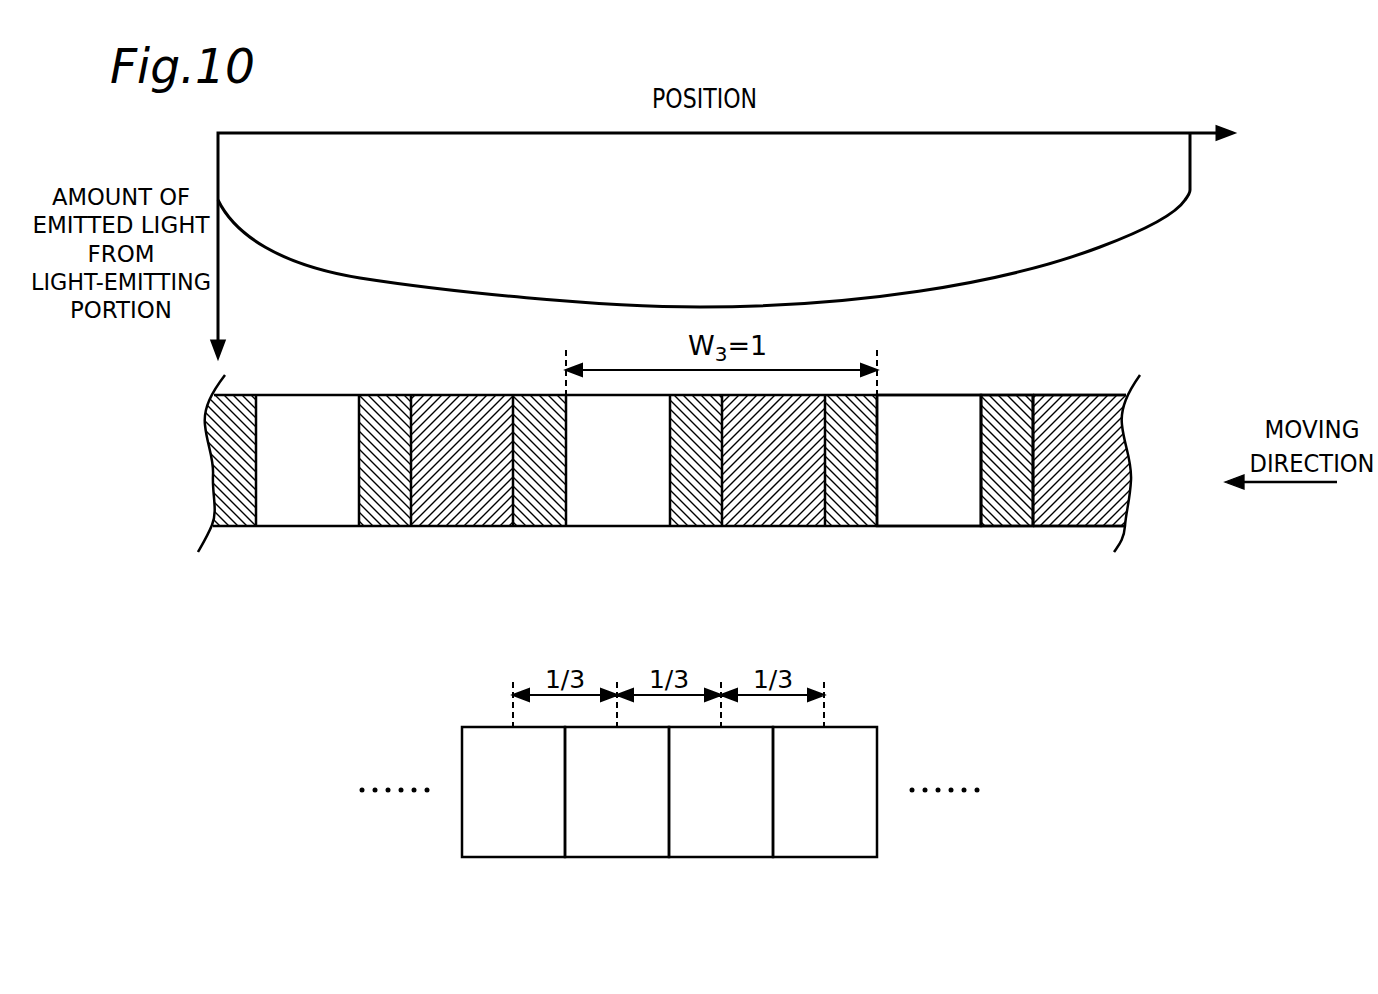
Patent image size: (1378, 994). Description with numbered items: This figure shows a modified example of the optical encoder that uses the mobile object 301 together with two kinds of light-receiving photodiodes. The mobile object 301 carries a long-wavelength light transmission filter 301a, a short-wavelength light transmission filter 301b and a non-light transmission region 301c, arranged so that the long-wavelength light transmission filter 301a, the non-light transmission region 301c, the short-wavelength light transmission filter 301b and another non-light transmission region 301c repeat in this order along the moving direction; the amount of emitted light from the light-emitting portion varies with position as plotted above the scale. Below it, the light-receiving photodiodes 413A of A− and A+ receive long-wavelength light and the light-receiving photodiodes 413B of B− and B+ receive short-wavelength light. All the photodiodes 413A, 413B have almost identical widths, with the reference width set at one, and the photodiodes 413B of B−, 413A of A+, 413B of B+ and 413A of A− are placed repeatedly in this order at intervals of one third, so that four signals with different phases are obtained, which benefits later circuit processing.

The mobile object 301 is at (388, 394).
The long-wavelength light transmission filter 301a is at (930, 420).
The short-wavelength light transmission filter 301b is at (1090, 418).
The non-light transmission region 301c is at (1005, 418).
The light-receiving photodiodes of A− and A+ 413A is at (828, 903).
The light-receiving photodiodes of B− and B+ 413B is at (724, 903).